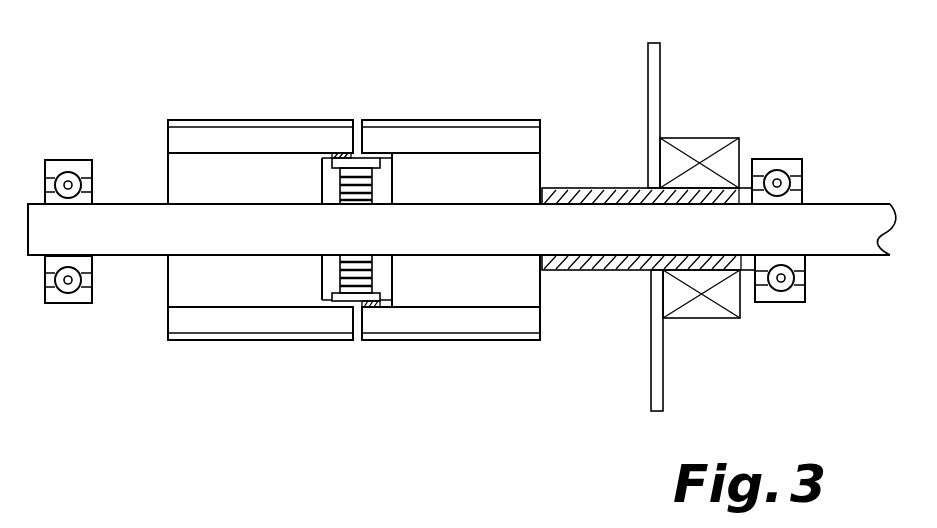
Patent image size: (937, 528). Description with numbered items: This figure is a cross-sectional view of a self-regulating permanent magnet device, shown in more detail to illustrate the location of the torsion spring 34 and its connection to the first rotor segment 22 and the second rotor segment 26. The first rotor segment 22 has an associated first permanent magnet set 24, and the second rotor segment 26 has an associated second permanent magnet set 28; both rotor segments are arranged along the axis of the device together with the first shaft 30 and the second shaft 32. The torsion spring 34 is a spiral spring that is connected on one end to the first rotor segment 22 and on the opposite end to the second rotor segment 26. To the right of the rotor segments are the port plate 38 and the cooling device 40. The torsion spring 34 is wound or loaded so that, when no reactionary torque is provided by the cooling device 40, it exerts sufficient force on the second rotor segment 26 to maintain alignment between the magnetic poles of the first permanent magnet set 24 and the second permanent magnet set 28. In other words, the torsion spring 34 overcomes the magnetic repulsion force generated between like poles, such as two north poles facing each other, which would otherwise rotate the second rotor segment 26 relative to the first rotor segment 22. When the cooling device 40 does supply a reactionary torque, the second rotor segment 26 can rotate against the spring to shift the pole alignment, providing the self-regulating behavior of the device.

The first rotor segment 22 is at (245, 231).
The first permanent magnet set 24 is at (223, 138).
The second rotor segment 26 is at (466, 231).
The second permanent magnet set 28 is at (378, 140).
The first shaft 30 is at (852, 228).
The second shaft 32 is at (590, 263).
The torsion spring 34 is at (357, 157).
The port plate 38 is at (650, 63).
The cooling device 40 is at (685, 163).